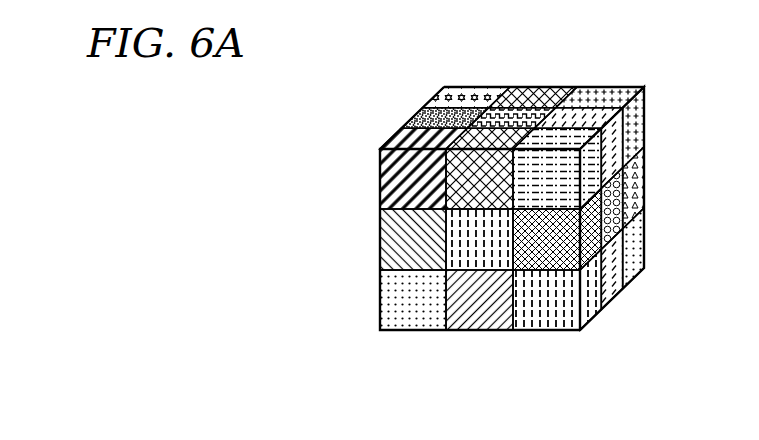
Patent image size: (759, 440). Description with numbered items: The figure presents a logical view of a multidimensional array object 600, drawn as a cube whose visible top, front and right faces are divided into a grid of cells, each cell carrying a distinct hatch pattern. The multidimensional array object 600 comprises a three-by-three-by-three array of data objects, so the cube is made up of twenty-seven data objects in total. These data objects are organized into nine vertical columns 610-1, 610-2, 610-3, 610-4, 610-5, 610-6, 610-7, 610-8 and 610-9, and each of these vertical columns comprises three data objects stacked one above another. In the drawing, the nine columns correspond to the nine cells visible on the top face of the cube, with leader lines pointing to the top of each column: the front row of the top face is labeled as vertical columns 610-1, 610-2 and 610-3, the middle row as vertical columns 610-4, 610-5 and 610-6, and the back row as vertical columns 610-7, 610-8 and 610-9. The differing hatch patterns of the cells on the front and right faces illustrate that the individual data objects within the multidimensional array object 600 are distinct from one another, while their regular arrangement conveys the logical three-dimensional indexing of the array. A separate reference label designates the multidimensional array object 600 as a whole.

The multidimensional array object 600 is at (217, 118).
The vertical column 610-1 is at (388, 150).
The vertical column 610-2 is at (462, 178).
The vertical column 610-3 is at (583, 150).
The vertical column 610-4 is at (413, 122).
The vertical column 610-5 is at (497, 108).
The vertical column 610-6 is at (617, 115).
The vertical column 610-7 is at (443, 93).
The vertical column 610-8 is at (533, 90).
The vertical column 610-9 is at (617, 93).